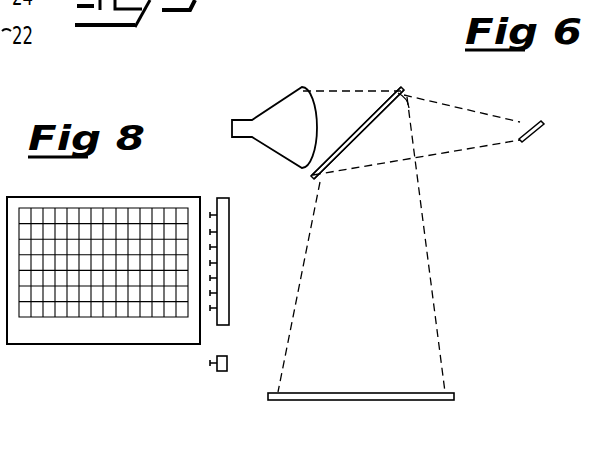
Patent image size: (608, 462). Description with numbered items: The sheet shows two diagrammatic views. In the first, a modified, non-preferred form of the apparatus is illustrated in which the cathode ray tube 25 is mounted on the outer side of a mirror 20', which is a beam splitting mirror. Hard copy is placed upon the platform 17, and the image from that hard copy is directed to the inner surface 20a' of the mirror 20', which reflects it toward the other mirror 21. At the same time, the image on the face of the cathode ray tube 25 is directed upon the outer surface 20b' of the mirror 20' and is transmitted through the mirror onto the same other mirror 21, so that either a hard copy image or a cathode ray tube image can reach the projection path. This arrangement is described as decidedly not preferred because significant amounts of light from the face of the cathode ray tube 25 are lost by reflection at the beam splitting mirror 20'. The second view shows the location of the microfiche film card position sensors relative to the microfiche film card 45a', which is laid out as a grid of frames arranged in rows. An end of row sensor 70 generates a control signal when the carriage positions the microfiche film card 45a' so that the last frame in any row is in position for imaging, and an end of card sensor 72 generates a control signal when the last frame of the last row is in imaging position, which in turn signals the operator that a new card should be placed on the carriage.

In FIG. 6, the platform 17 is at (318, 393).
In FIG. 6, the mirror 20' is at (390, 108).
In FIG. 6, the inner surface 20a' is at (392, 122).
In FIG. 6, the outer surface 20b' is at (356, 116).
In FIG. 6, the other mirror 21 is at (520, 122).
In FIG. 6, the cathode ray tube 25 is at (274, 105).
In FIG. 8, the microfiche film card 45a' is at (103, 251).
In FIG. 8, the end of row sensor 70 is at (229, 232).
In FIG. 8, the end of card sensor 72 is at (227, 357).